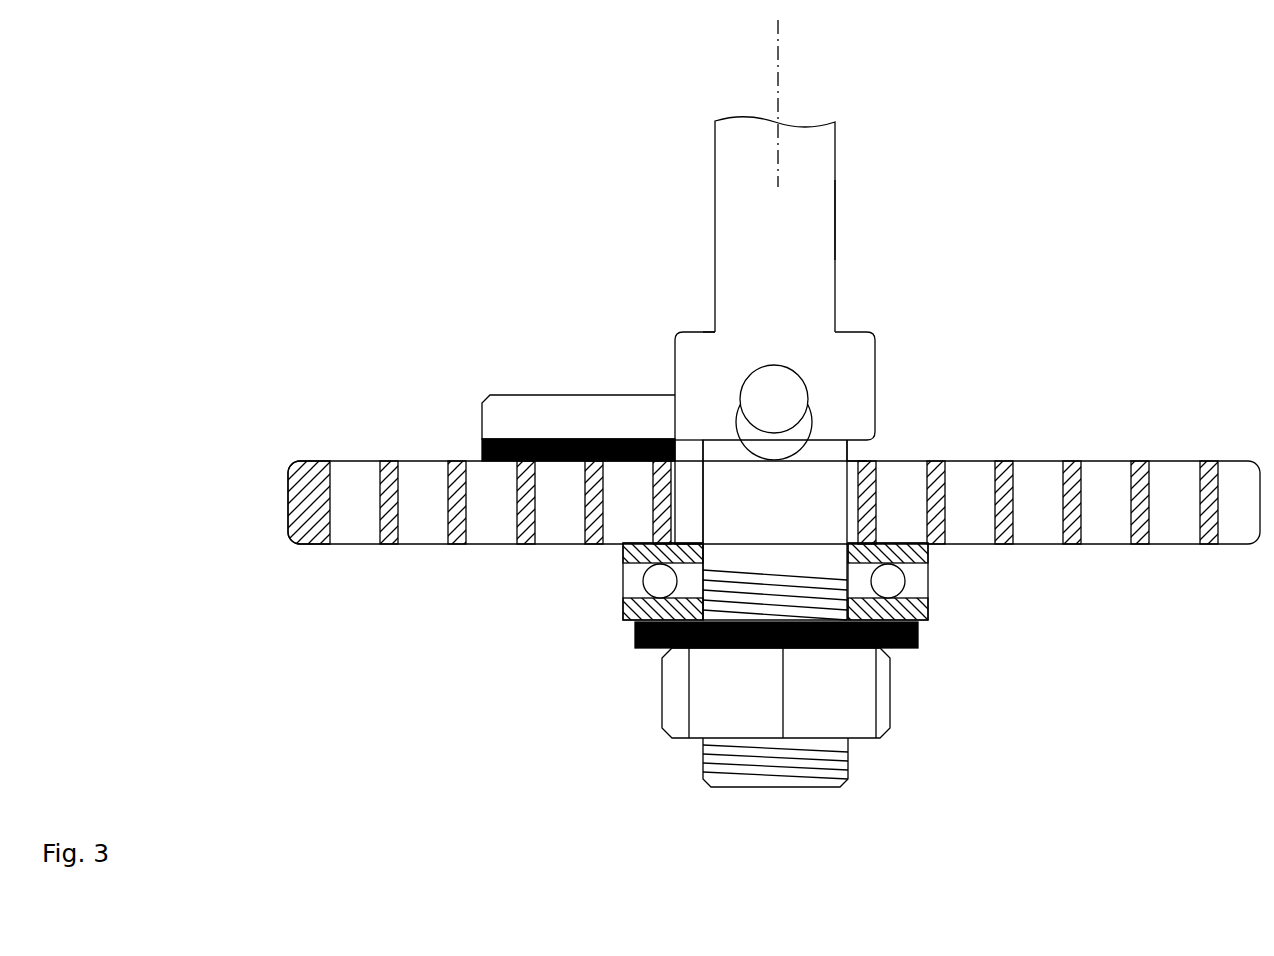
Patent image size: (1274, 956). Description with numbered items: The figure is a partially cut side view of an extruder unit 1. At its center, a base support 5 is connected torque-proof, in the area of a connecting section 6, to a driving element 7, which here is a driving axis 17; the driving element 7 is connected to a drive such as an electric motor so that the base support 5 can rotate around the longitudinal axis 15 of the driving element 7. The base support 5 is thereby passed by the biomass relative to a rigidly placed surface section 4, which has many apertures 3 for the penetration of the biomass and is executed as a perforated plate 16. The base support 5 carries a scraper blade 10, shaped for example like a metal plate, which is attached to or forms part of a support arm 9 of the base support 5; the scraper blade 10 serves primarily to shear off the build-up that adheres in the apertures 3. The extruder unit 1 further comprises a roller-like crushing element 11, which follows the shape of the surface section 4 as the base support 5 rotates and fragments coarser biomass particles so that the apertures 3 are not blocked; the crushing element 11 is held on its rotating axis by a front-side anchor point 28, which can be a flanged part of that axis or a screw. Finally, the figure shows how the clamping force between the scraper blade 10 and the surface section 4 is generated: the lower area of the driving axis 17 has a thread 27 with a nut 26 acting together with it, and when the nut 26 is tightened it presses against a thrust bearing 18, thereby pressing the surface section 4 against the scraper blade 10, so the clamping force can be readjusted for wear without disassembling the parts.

The extruder unit 1 is at (353, 218).
The apertures 3 is at (711, 435).
The surface section 4 is at (1073, 435).
The base support 5 is at (825, 401).
The connecting section 6 is at (703, 320).
The driving element 7 is at (853, 224).
The support arm 9 is at (578, 351).
The scraper blade 10 is at (507, 426).
The crushing element 11 is at (775, 530).
The longitudinal axis 15 is at (874, 103).
The perforated plate 16 is at (246, 483).
The driving axis 17 is at (909, 220).
The thrust bearing 18 is at (588, 592).
The nut 26 is at (867, 693).
The thread 27 is at (682, 768).
The anchor point 28 is at (787, 418).